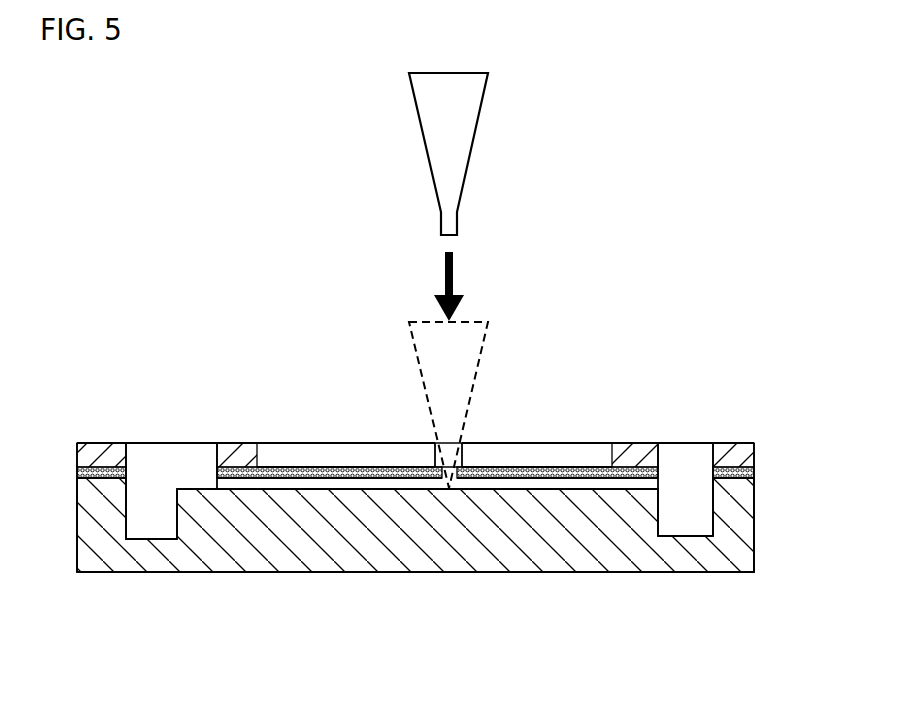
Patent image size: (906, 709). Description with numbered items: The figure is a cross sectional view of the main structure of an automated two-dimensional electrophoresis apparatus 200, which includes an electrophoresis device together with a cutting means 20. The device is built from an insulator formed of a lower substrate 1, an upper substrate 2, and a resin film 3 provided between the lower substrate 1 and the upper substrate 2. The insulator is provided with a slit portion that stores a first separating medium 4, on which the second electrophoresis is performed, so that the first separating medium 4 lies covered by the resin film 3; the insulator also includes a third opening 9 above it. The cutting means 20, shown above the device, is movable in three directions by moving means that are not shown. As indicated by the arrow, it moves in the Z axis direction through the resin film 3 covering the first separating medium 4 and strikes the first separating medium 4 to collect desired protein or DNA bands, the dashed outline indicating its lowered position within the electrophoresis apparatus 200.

The lower substrate 1 is at (750, 527).
The upper substrate 2 is at (758, 446).
The resin film 3 is at (758, 470).
The first separating medium 4 is at (370, 485).
The third opening 9 is at (311, 455).
The cutting means 20 is at (469, 135).
The electrophoresis apparatus 200 is at (735, 305).